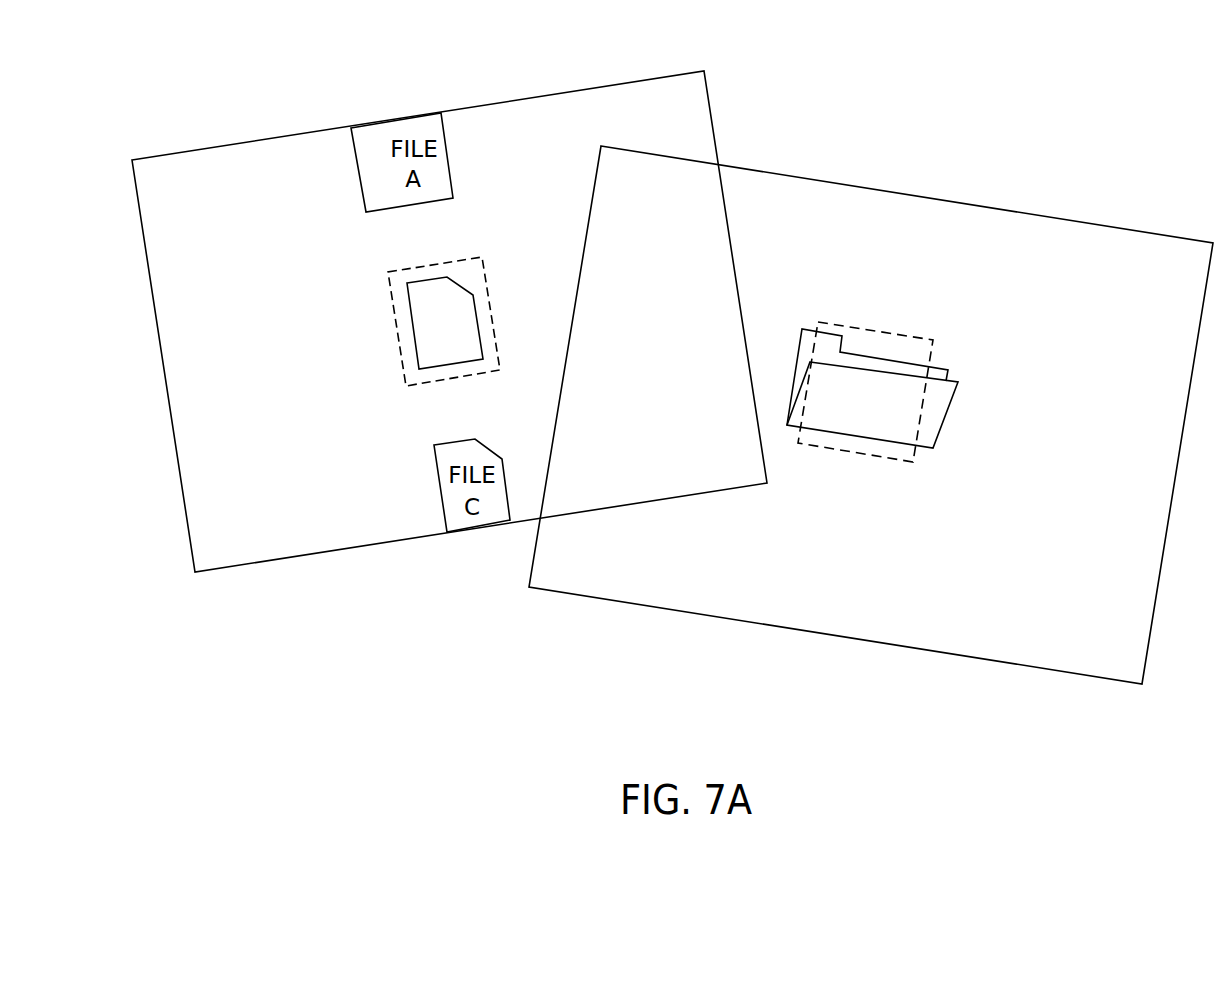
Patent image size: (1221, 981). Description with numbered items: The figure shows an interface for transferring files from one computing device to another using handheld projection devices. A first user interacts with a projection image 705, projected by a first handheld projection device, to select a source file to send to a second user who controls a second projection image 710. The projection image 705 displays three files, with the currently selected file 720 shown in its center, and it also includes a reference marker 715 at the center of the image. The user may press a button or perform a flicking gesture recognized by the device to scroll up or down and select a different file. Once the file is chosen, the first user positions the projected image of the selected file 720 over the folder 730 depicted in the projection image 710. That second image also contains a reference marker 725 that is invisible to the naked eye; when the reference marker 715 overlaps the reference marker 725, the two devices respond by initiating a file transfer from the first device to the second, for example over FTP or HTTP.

The projection image 705 is at (580, 90).
The projection image 710 is at (988, 205).
The reference marker 715 is at (485, 274).
The currently selected file 720 is at (413, 347).
The reference marker 725 is at (915, 340).
The folder 730 is at (942, 405).